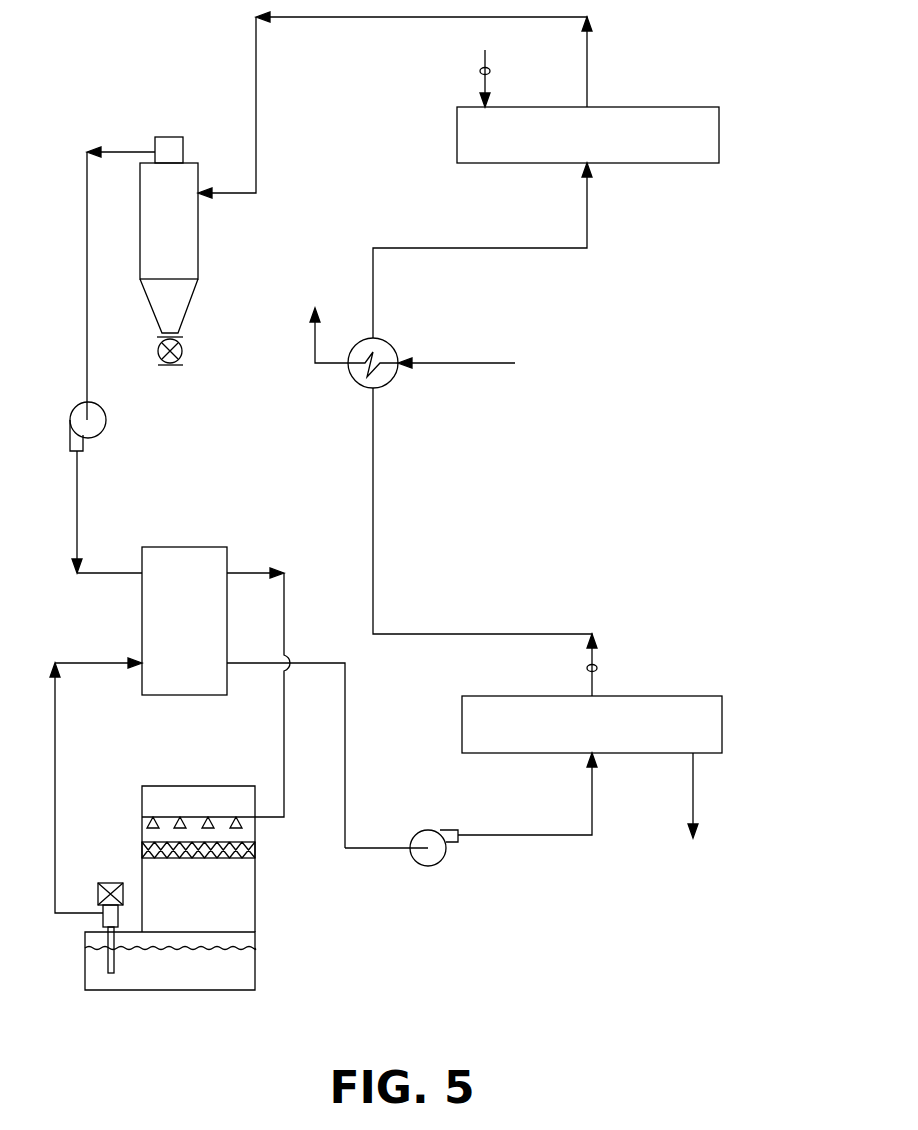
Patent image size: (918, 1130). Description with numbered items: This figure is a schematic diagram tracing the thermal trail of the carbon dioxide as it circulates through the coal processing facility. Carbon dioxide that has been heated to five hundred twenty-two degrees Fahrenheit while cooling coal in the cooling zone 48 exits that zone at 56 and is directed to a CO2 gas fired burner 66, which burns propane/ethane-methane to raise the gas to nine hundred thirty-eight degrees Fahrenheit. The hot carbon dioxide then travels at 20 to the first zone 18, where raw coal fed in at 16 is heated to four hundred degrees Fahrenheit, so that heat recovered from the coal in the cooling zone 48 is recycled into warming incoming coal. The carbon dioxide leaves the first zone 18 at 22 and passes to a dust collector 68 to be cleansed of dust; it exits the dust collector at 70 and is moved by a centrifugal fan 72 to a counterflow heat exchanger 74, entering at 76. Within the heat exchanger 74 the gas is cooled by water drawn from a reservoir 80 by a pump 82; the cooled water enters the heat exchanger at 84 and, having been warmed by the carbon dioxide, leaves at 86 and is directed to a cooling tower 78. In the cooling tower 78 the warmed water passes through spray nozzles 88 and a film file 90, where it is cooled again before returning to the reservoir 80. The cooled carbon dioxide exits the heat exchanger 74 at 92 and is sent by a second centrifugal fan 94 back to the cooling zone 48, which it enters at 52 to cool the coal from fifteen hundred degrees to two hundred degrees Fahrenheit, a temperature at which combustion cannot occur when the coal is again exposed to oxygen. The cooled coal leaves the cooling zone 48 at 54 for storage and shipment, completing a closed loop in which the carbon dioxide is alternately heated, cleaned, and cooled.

The feed point to first zone 16 is at (490, 69).
The first zone 18 is at (665, 118).
The carbon dioxide line to first zone 20 is at (588, 222).
The first zone carbon dioxide exit 22 is at (588, 72).
The cooling zone 48 is at (668, 710).
The cooling zone carbon dioxide inlet 52 is at (595, 805).
The coal exit from cooling zone 54 is at (697, 805).
The cooling zone carbon dioxide exit 56 is at (597, 665).
The CO2 gas fired burner 66 is at (393, 347).
The dust collector 68 is at (178, 243).
The dust collector exit 70 is at (122, 148).
The centrifugal fan 72 is at (97, 420).
The counterflow heat exchanger 74 is at (175, 545).
The heat exchanger carbon dioxide inlet 76 is at (108, 576).
The cooling tower 78 is at (230, 905).
The reservoir 80 is at (240, 970).
The pump 82 is at (112, 880).
The heat exchanger water inlet 84 is at (100, 668).
The heat exchanger water outlet 86 is at (252, 560).
The spray nozzles 88 is at (195, 815).
The film file 90 is at (257, 850).
The heat exchanger carbon dioxide outlet 92 is at (248, 668).
The centrifugal fan 94 is at (433, 860).